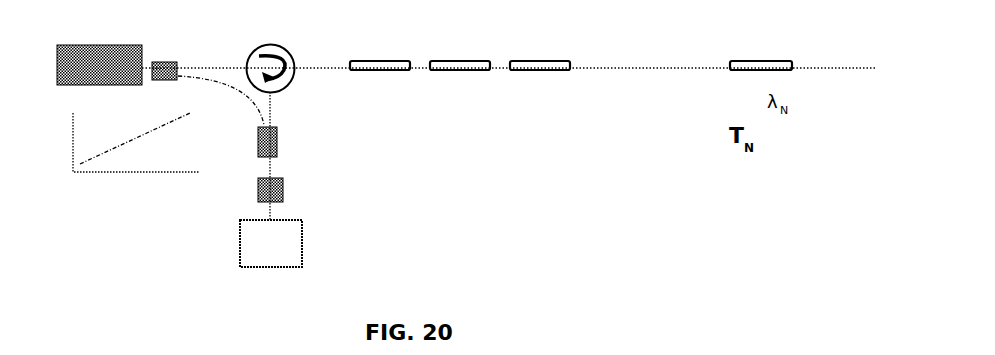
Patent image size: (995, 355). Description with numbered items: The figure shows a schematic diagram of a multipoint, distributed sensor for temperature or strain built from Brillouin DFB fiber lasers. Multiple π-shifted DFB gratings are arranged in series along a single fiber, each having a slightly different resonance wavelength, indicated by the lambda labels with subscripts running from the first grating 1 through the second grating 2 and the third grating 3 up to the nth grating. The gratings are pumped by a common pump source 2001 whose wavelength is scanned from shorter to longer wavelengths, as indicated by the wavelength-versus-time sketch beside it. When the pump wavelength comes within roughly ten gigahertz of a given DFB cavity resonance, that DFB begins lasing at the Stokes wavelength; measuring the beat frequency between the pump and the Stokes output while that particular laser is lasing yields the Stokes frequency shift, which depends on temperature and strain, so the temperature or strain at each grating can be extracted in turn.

The wavelength-swept laser source with modulator 2001 is at (126, 146).
The fiber Bragg grating T1 (wavelength λ1) 1 is at (383, 108).
The π-phase-shifted fiber Bragg grating T2 (wavelength λ2) 2 is at (465, 95).
The fiber Bragg grating T3 (wavelength λ3) 3 is at (547, 108).